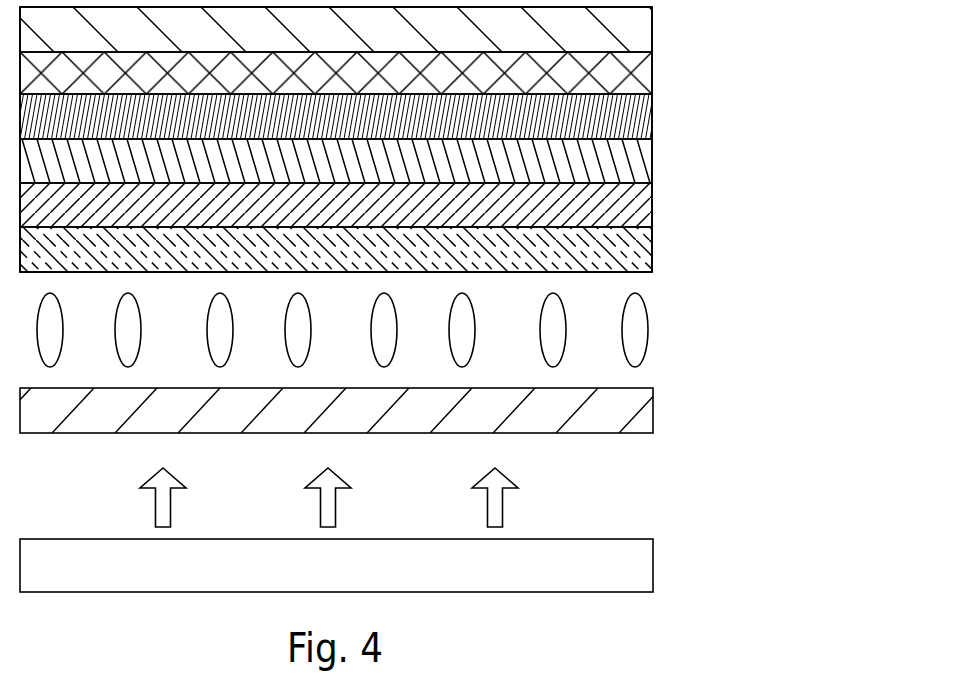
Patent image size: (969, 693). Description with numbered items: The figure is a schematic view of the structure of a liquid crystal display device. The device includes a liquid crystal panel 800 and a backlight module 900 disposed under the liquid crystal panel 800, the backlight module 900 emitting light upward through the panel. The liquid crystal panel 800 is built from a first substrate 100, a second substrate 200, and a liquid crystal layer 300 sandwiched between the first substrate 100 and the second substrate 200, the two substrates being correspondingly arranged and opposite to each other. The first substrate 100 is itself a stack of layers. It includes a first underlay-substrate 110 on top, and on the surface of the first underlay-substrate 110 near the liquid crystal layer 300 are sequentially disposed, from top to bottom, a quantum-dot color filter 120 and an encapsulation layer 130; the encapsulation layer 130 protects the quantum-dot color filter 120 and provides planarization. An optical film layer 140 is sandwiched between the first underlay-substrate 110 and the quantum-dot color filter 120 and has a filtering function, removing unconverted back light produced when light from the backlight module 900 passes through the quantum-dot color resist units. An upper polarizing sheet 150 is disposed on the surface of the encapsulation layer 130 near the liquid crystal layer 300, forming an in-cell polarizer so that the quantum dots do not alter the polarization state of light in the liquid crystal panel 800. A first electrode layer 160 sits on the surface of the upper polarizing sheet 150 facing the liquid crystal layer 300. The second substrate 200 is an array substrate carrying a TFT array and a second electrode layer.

The first substrate 100 is at (429, 138).
The first underlay-substrate 110 is at (595, 35).
The optical film layer 140 is at (595, 78).
The quantum-dot color filter 120 is at (595, 120).
The encapsulation layer 130 is at (595, 167).
The upper polarizing sheet 150 is at (595, 211).
The first electrode layer 160 is at (393, 248).
The liquid crystal layer 300 is at (648, 330).
The second substrate 200 is at (420, 408).
The liquid crystal panel 800 is at (476, 218).
The backlight module 900 is at (630, 568).